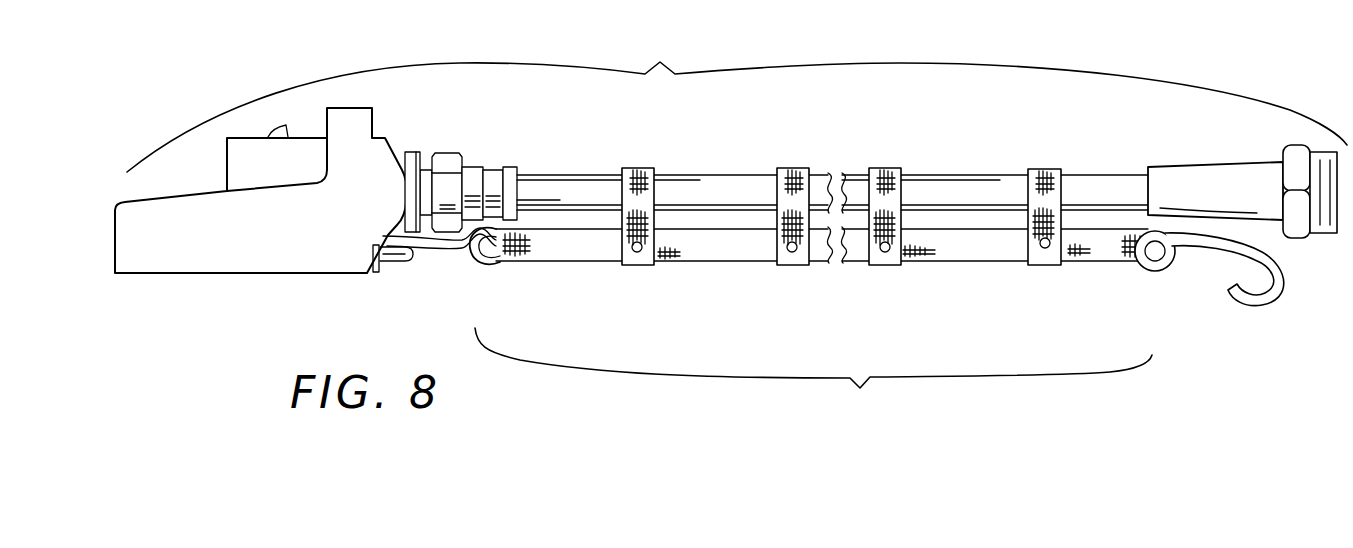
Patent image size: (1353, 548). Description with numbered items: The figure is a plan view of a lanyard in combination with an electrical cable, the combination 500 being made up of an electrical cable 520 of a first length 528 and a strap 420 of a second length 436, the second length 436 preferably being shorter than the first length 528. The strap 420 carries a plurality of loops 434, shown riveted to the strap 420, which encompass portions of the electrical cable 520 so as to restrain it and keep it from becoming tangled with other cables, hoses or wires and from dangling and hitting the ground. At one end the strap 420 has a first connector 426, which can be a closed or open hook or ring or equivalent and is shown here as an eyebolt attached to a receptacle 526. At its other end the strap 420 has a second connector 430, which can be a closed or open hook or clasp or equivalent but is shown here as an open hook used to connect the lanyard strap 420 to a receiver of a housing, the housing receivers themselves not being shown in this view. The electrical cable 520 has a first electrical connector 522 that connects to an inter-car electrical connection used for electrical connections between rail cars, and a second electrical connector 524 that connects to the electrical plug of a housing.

The lanyard and electrical cable combination 500 is at (780, 62).
The first length 528 is at (737, 103).
The first electrical connector 522 is at (262, 270).
The receptacle 526 is at (377, 272).
The first connector 426 is at (483, 263).
The strap 420 is at (702, 287).
The electrical cable 520 is at (962, 172).
The second electrical connector 524 is at (1247, 168).
The loops 434 is at (1047, 252).
The second connector 430 is at (1243, 308).
The second length 436 is at (813, 372).